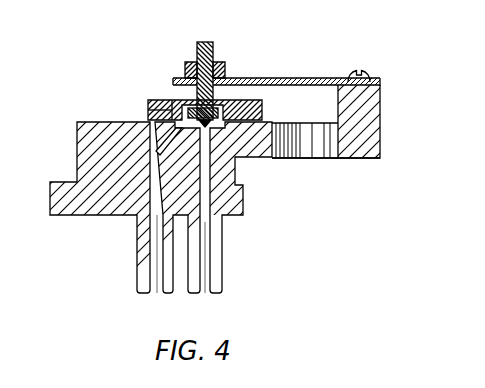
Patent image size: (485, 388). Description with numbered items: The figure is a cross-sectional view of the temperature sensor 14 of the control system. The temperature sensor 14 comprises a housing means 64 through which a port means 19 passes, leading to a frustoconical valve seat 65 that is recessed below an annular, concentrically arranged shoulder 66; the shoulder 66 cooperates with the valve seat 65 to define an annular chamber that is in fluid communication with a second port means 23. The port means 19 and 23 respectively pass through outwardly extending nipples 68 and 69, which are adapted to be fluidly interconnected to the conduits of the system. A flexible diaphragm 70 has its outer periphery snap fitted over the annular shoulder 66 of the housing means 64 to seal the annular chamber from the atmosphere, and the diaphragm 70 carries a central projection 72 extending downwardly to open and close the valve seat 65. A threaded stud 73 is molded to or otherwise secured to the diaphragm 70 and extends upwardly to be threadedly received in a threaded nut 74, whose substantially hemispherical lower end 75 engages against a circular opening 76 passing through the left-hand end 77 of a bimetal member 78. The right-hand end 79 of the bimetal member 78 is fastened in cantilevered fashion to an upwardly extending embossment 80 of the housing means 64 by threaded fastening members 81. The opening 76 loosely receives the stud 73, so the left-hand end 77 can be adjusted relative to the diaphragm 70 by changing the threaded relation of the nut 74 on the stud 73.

The temperature sensor 14 is at (372, 160).
The port means 19 is at (207, 272).
The port means 23 is at (157, 276).
The housing means 64 is at (247, 214).
The frustoconical valve seat 65 is at (244, 187).
The annular shoulder 66 is at (147, 108).
The nipple 68 is at (222, 255).
The nipple 69 is at (136, 277).
The flexible diaphragm 70 is at (152, 101).
The central projection 72 is at (212, 131).
The threaded stud 73 is at (214, 52).
The threaded nut 74 is at (202, 42).
The hemispherical lower end 75 is at (190, 108).
The circular opening 76 is at (187, 104).
The left-hand end 77 is at (176, 79).
The bimetal member 78 is at (285, 82).
The right-hand end 79 is at (381, 81).
The embossment 80 is at (381, 108).
The threaded fastening members 81 is at (350, 72).